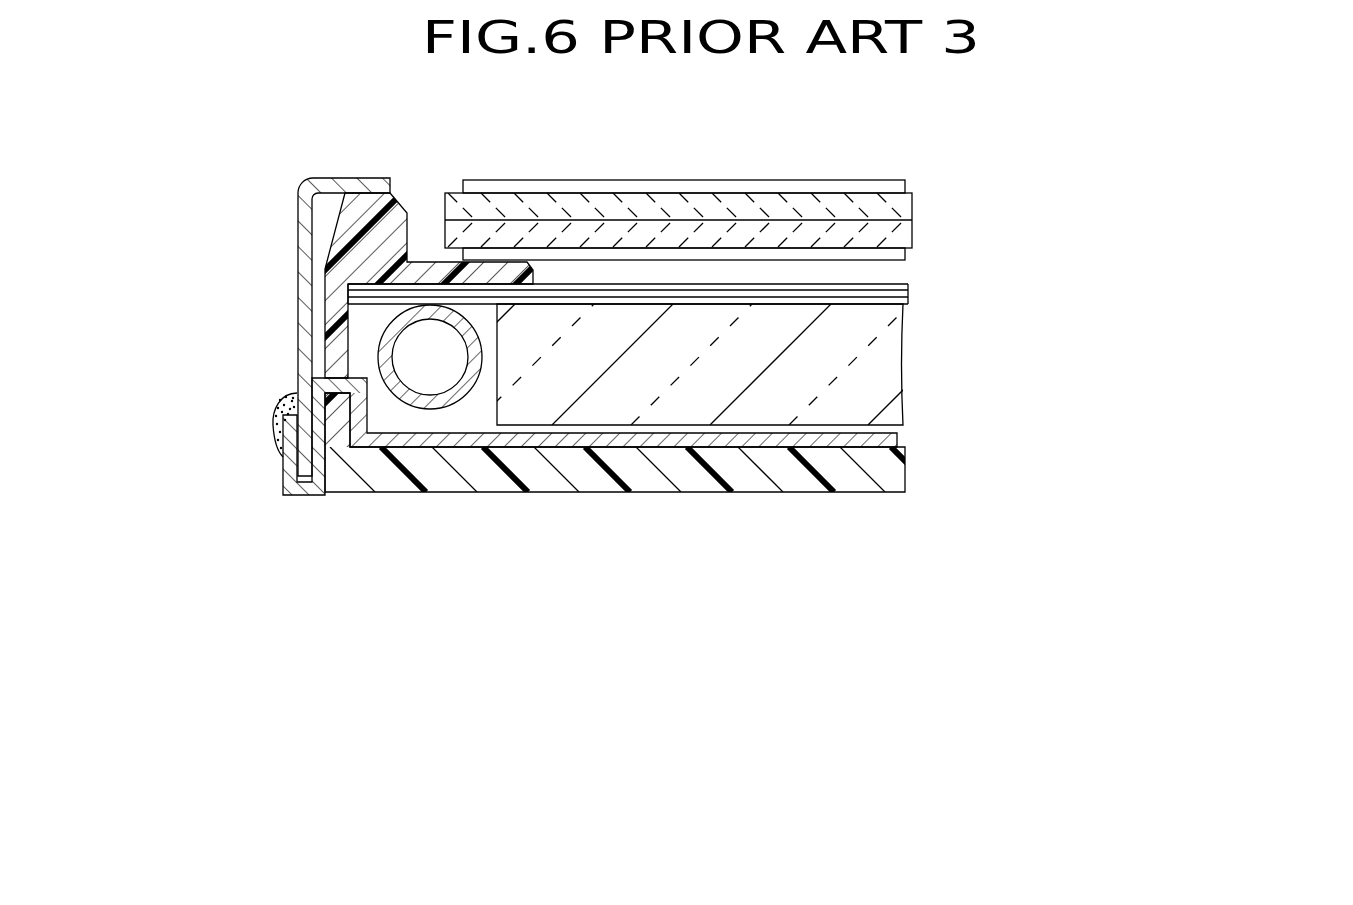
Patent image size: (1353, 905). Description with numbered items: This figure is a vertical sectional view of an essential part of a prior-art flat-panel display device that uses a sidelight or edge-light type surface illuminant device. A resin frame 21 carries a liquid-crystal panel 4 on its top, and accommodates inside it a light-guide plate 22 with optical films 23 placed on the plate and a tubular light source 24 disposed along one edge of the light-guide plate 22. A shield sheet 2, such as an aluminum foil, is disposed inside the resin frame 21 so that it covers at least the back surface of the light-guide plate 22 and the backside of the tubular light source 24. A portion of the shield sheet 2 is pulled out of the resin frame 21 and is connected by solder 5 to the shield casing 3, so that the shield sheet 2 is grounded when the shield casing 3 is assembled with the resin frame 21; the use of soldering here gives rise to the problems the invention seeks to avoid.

The shield sheet 2 is at (900, 440).
The shield casing 3 is at (299, 213).
The liquid-crystal panel 4 is at (912, 213).
The solder 5 is at (276, 418).
The resin frame 21 is at (902, 476).
The light-guide plate 22 is at (890, 364).
The optical films 23 is at (907, 298).
The tubular light source 24 is at (438, 400).